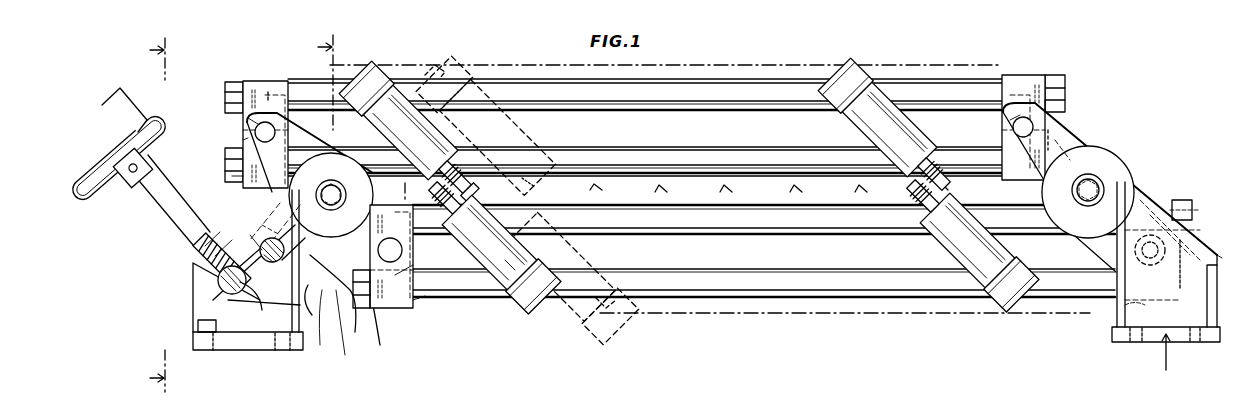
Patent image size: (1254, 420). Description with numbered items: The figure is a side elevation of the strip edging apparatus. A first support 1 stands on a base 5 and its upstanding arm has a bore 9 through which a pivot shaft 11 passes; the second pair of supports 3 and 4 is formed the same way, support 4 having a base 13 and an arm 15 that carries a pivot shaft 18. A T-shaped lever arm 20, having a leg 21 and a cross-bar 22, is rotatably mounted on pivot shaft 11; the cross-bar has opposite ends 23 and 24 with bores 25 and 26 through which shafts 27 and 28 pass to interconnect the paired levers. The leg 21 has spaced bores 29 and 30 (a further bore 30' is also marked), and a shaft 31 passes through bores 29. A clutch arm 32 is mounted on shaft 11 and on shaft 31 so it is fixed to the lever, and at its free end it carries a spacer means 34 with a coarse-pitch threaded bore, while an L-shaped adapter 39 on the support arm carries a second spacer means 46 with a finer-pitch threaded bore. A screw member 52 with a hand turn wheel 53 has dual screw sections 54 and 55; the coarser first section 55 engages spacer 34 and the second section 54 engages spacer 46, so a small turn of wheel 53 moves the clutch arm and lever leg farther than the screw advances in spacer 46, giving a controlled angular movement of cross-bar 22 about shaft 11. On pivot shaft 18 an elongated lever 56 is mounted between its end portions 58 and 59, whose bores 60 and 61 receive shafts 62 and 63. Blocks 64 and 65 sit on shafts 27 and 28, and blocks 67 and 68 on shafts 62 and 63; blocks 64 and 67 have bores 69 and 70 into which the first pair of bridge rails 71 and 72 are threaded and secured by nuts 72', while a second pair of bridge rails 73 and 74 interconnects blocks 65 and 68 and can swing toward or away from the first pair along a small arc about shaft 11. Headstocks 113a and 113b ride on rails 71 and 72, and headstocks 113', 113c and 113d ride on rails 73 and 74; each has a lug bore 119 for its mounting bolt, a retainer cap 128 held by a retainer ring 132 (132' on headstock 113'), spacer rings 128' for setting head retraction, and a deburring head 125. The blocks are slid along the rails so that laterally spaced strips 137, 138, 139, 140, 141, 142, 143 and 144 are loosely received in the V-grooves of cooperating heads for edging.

The support 1 is at (247, 350).
The support 3 is at (150, 218).
The support 4 is at (741, 206).
The base 5 is at (266, 350).
The bore 9 is at (172, 235).
The pivot shaft 11 is at (327, 181).
The base 13 is at (1150, 334).
The arm 15 is at (1132, 172).
The pivot shaft 18 is at (1088, 174).
The lever arm 20 is at (342, 292).
The leg 21 is at (332, 331).
The cross-bar 22 is at (306, 150).
The end 23 is at (250, 124).
The end 24 is at (419, 273).
The bore 25 is at (247, 140).
The bore 26 is at (402, 250).
The shaft 27 is at (255, 133).
The shaft 28 is at (413, 300).
The bore 29 is at (258, 225).
The bore 30 is at (274, 242).
The shaft 30' is at (304, 327).
The shaft 31 is at (302, 239).
The clutch arm 32 is at (252, 240).
The spacer means 34 is at (238, 284).
The L-shaped adapter 39 is at (174, 254).
The second spacer means 46 is at (210, 260).
The screw member 52 is at (146, 193).
The hand turn wheel 53 is at (100, 165).
The screw section 54 is at (200, 252).
The screw section 55 is at (224, 290).
The lever 56 is at (1100, 142).
The end portion 58 is at (1010, 117).
The end portion 59 is at (1217, 256).
The bore 60 is at (1046, 108).
The bore 61 is at (1200, 235).
The shaft 62 is at (1013, 128).
The shaft 63 is at (1110, 250).
The block 64 is at (256, 81).
The block 65 is at (402, 308).
The block 67 is at (1005, 78).
The block 68 is at (1117, 317).
The bore 69 is at (269, 82).
The bore 70 is at (232, 177).
The bridge rail 71 is at (710, 108).
The bridge rail 72 is at (637, 116).
The nut 72' is at (791, 259).
The bridge rail 73 is at (744, 232).
The bridge rail 74 is at (790, 272).
The headstock 113' is at (489, 260).
The headstock 113a is at (531, 140).
The headstock 113b is at (893, 82).
The headstock 113c is at (606, 257).
The headstock 113d is at (942, 248).
The bore 119 is at (408, 81).
The deburring head 125 is at (444, 186).
The retainer cap 128 is at (404, 95).
The spacer ring 128' is at (512, 297).
The retainer ring 132 is at (366, 69).
The retainer ring 132' is at (541, 296).
The strip 137 is at (460, 188).
The strip 138 is at (530, 187).
The strip 139 is at (612, 188).
The strip 140 is at (677, 190).
The strip 141 is at (742, 190).
The strip 142 is at (812, 190).
The strip 143 is at (877, 190).
The strip 144 is at (943, 186).